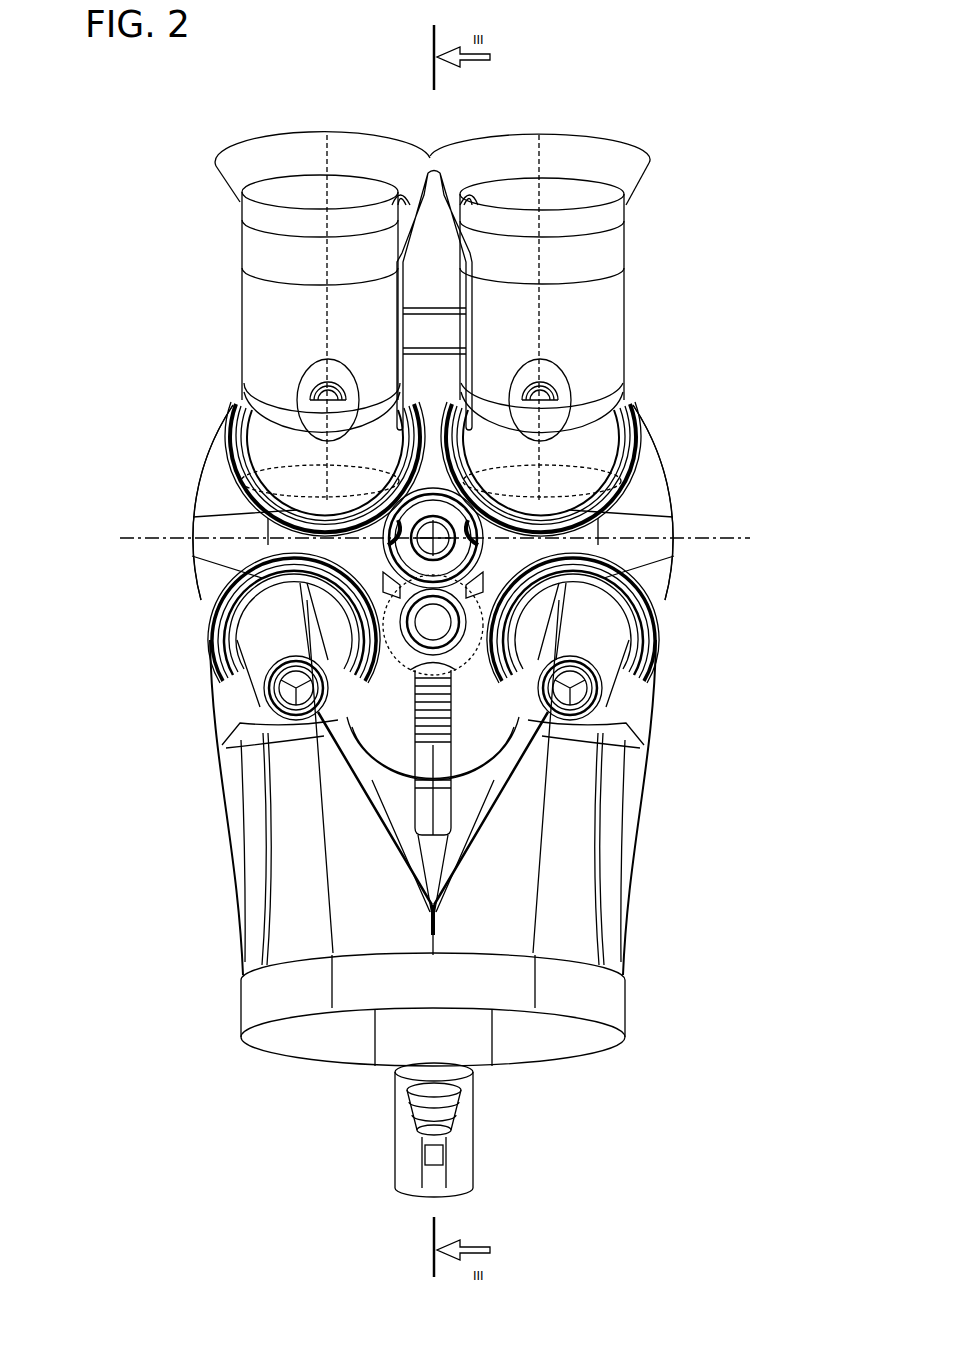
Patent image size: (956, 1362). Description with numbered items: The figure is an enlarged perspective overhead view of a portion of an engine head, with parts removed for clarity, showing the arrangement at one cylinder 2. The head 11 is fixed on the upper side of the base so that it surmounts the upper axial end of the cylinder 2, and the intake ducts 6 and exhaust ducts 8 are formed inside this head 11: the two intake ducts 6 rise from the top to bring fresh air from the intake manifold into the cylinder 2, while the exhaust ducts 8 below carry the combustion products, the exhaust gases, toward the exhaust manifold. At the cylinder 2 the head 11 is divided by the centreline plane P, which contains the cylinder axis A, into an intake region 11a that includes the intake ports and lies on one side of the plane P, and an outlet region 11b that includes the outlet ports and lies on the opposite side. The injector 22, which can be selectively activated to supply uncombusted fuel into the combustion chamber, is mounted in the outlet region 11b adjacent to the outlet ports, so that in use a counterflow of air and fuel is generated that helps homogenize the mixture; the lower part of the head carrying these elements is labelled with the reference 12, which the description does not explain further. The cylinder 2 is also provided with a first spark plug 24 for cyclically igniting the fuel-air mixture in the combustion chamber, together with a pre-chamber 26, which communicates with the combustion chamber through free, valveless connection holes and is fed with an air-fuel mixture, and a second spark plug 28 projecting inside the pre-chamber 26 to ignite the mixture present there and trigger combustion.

The cylinder 2 is at (662, 458).
The intake duct 6 is at (570, 152).
The exhaust duct 8 is at (553, 1040).
The head 11 is at (199, 574).
The intake region 11a is at (654, 494).
The outlet region 11b is at (656, 587).
The lower bracket 12 is at (253, 697).
The injector 22 is at (392, 1102).
The first spark plug 24 is at (573, 688).
The pre-chamber 26 is at (490, 549).
The second spark plug 28 is at (350, 468).
The axis A is at (652, 433).
The centreline plane P is at (738, 537).